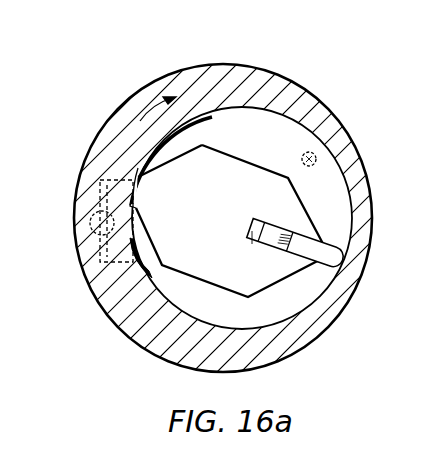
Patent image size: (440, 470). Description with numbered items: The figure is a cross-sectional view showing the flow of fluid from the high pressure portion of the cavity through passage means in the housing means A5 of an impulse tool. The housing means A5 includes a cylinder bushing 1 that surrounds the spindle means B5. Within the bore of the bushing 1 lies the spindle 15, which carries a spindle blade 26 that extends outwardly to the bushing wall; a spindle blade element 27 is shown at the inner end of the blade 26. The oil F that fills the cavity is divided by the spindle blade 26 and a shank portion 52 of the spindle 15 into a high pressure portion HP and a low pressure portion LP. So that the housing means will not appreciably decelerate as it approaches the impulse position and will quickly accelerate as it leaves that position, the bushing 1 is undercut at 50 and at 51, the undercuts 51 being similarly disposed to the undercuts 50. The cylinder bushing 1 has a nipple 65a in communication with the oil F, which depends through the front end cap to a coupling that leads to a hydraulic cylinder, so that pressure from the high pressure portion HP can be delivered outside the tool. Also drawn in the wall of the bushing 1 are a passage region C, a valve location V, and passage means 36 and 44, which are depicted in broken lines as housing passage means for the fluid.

The cylinder bushing 1 is at (307, 107).
The spindle 15 is at (213, 280).
The spindle blade 26 is at (325, 250).
The vane spring seal 27 is at (252, 243).
The bypass passage 36 is at (100, 181).
The passage 44 is at (101, 265).
The undercut 50 is at (152, 157).
The undercut 51 is at (151, 266).
The shank portion 52 is at (139, 188).
The nipple 65a is at (317, 152).
The channel C is at (99, 238).
The valve V is at (102, 223).
The oil F is at (333, 178).
The high pressure portion HP is at (260, 120).
The low pressure portion LP is at (247, 317).
The housing means A5 is at (281, 74).
The spindle means B5 is at (276, 166).